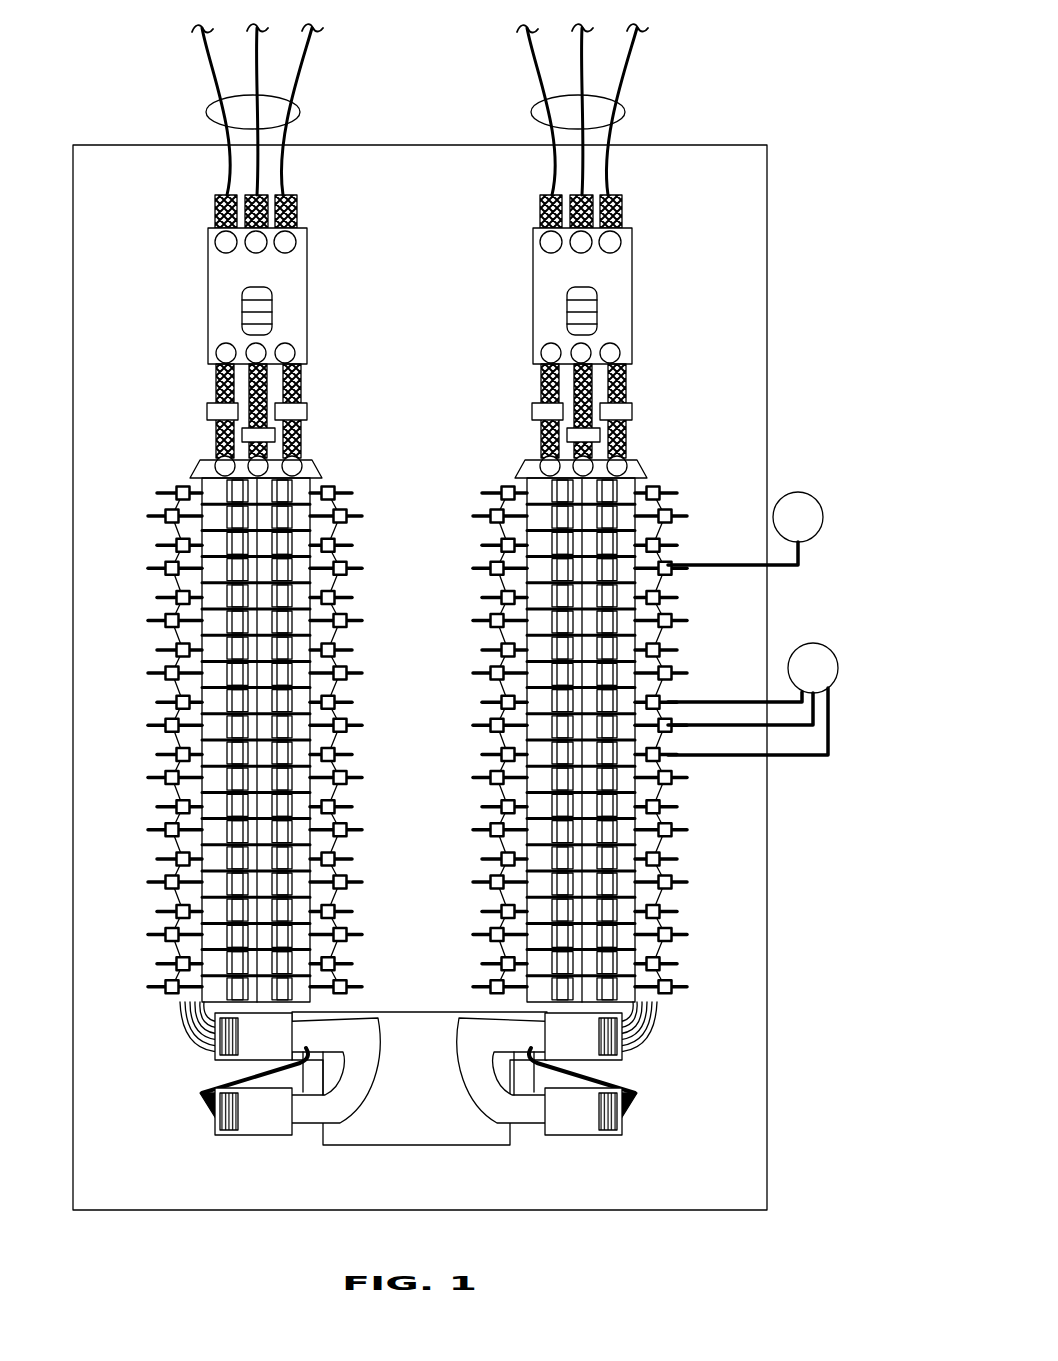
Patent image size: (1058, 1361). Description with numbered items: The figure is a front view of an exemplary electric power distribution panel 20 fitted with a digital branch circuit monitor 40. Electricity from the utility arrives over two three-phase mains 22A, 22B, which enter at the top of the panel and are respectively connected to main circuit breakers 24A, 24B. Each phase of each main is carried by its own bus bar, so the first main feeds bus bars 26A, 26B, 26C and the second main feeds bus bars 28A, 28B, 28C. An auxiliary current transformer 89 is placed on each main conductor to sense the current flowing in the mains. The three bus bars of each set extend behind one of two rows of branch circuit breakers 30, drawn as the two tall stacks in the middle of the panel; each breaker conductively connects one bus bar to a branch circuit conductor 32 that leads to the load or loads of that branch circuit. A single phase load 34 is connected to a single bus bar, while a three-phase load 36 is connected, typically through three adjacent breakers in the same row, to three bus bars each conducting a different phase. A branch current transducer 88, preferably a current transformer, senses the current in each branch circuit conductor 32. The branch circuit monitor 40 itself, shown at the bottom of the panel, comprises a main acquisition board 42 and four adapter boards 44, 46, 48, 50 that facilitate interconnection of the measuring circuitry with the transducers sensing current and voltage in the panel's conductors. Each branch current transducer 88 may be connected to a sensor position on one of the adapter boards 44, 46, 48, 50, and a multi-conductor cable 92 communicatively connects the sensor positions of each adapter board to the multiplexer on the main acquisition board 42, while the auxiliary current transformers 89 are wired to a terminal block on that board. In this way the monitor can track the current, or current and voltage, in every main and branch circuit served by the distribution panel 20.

The distribution panel 20 is at (740, 86).
The three-phase main 22A is at (300, 112).
The three-phase main 22B is at (625, 112).
The main circuit breaker 24A is at (307, 283).
The main circuit breaker 24B is at (632, 283).
The bus bar 26A is at (215, 388).
The bus bar 26B is at (263, 347).
The bus bar 26C is at (305, 383).
The bus bar 28A is at (540, 388).
The bus bar 28B is at (588, 347).
The bus bar 28C is at (630, 383).
The current transformer 89 is at (308, 417).
The branch circuit breakers 30 is at (315, 477).
The branch circuit conductor 32 is at (177, 490).
The branch current transducer 88 is at (342, 563).
The single phase load 34 is at (810, 493).
The three-phase load 36 is at (818, 644).
The branch circuit monitor 40 is at (333, 1158).
The main acquisition board 42 is at (407, 1147).
The adapter board 44 is at (217, 1057).
The adapter board 46 is at (242, 1135).
The adapter board 48 is at (617, 1060).
The adapter board 50 is at (620, 1137).
The multi-conductor cable 92 is at (462, 1027).